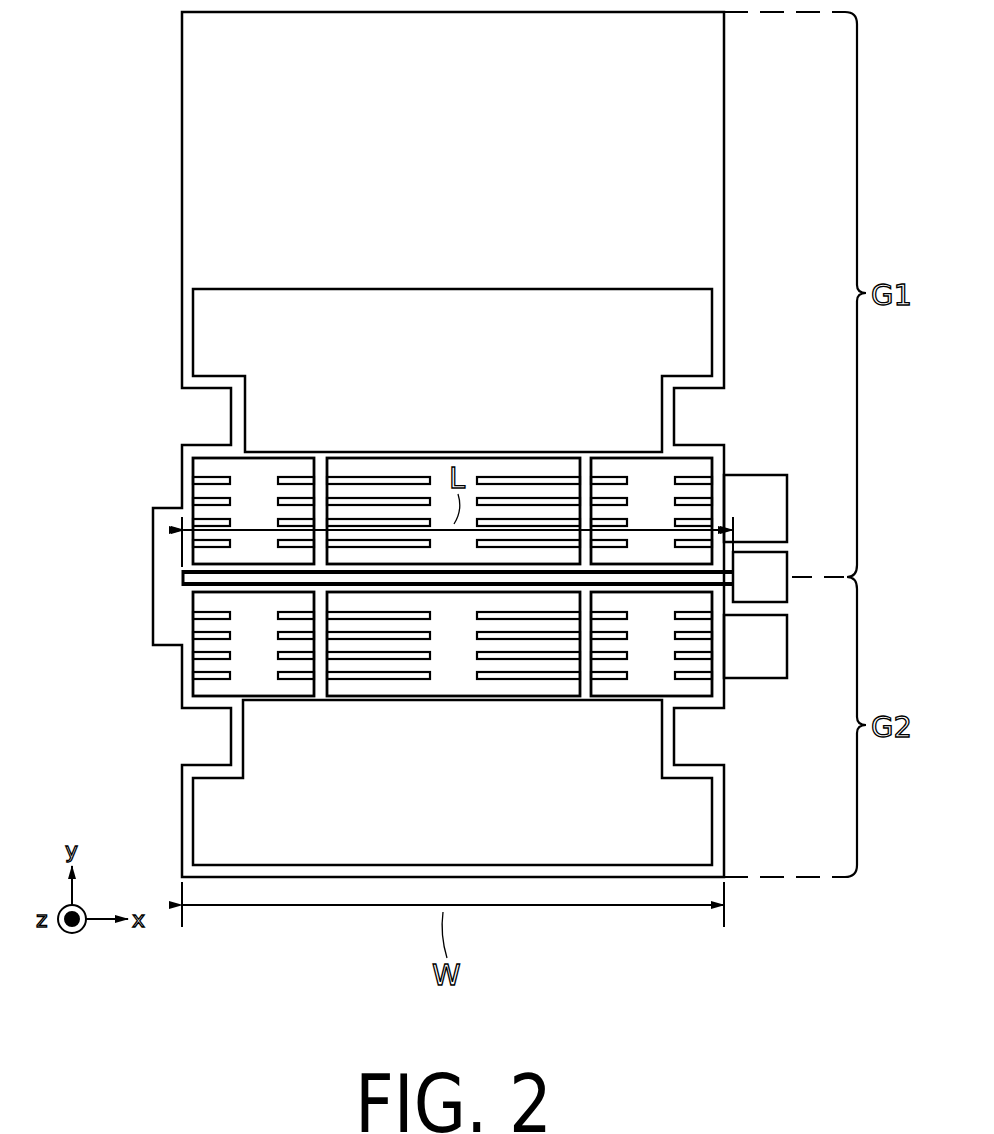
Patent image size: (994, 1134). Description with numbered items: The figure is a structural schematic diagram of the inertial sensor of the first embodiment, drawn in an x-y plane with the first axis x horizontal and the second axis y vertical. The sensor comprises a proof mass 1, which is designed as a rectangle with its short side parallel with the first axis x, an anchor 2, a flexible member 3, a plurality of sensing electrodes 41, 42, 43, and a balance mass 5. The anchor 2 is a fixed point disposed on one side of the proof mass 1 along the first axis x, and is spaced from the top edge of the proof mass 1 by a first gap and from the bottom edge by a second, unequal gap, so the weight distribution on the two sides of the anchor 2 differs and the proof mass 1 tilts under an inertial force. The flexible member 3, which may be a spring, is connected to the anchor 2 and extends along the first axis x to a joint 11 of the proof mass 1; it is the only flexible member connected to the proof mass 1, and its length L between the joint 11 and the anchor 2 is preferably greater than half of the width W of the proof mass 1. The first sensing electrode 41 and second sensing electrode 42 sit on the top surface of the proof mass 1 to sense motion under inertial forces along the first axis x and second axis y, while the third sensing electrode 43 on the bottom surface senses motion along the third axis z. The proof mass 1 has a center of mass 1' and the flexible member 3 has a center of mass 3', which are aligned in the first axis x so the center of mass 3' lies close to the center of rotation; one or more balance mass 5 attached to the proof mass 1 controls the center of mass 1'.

The proof mass 1 is at (471, 444).
The center of mass of the proof mass 1' is at (482, 370).
The anchor 2 is at (787, 588).
The flexible member 3 is at (423, 610).
The center of mass of the flexible member 3' is at (461, 666).
The balance mass 5 is at (758, 475).
The joint 11 is at (181, 574).
The first sensing electrode 41 is at (216, 468).
The second sensing electrode 42 is at (378, 470).
The third sensing electrode 43 is at (378, 305).